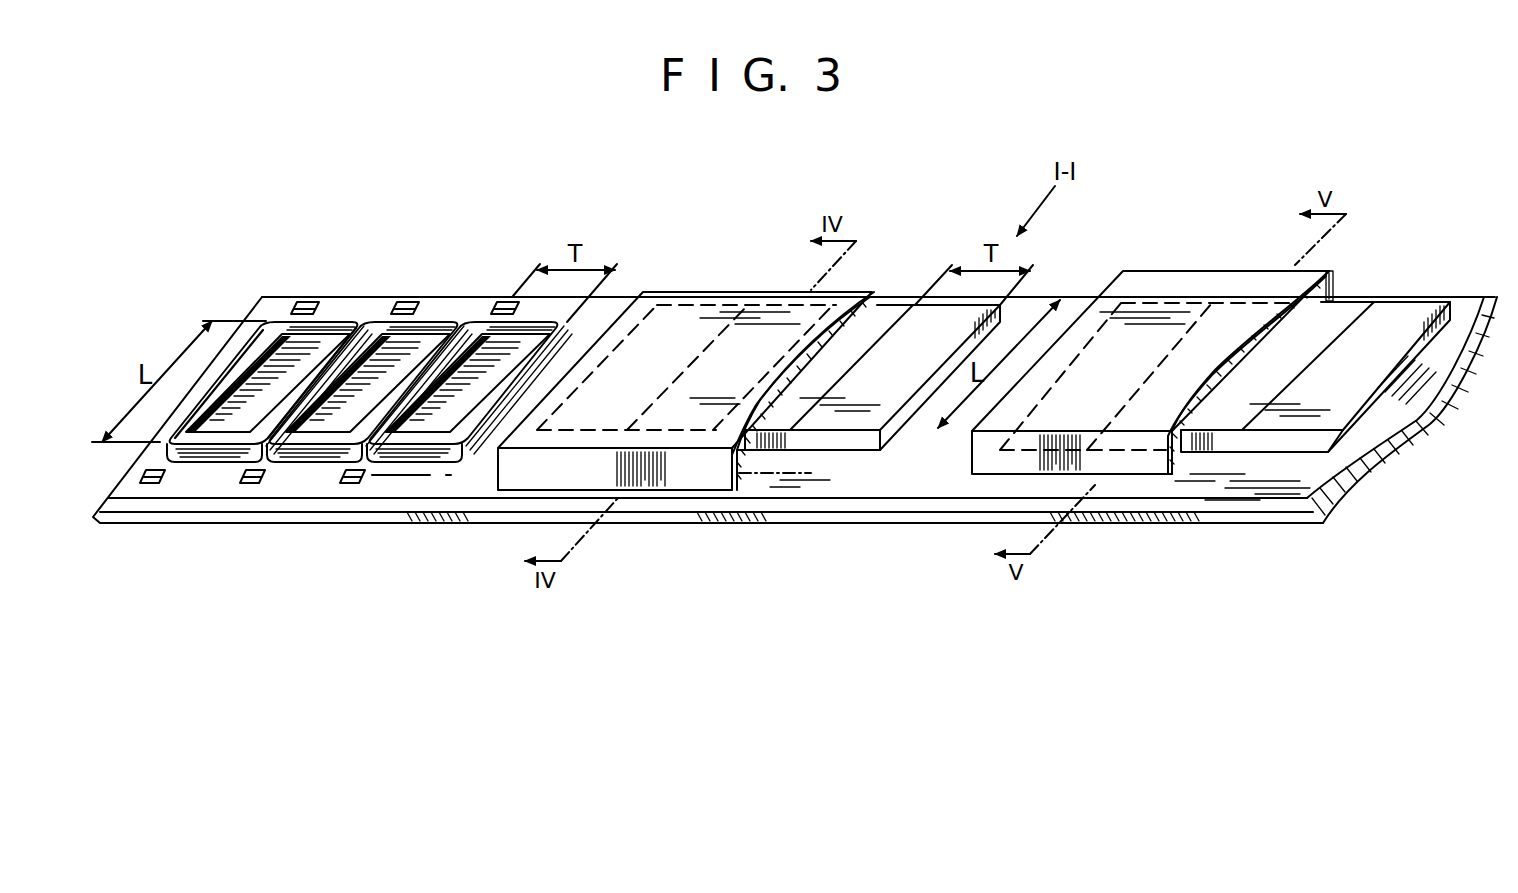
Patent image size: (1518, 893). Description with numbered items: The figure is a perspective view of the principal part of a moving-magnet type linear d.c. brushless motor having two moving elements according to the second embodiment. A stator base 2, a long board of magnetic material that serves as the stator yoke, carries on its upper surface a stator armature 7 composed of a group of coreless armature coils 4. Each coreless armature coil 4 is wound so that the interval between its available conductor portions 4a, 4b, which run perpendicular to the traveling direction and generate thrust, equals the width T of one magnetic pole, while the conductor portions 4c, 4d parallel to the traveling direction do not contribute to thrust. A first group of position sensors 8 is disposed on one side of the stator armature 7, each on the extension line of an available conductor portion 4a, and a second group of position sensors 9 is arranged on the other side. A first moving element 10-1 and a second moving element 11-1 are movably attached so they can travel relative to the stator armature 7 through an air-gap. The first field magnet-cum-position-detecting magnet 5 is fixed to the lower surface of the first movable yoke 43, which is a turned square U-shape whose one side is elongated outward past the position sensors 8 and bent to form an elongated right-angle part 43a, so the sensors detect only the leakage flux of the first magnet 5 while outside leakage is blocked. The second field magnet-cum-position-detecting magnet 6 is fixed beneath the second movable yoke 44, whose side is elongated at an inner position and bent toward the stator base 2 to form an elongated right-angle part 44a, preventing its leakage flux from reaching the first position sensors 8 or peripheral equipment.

The stator base 2 is at (826, 482).
The coreless armature coil 4 is at (431, 295).
The available conductor portion 4a is at (228, 378).
The available conductor portion 4b is at (301, 434).
The conductor portion 4c is at (336, 322).
The conductor portion 4d is at (205, 450).
The first field magnet-cum-position-detecting magnet 5 is at (893, 318).
The second field magnet-cum-position-detecting magnet 6 is at (1341, 318).
The stator armature 7 is at (319, 281).
The first group of position sensors 8 is at (346, 484).
The second group of position sensors 9 is at (298, 302).
The first moving element 10-1 is at (719, 293).
The second moving element 11-1 is at (1223, 275).
The first movable yoke 43 is at (684, 292).
The elongated right-angle part 43a is at (699, 462).
The second movable yoke 44 is at (1161, 272).
The elongated right-angle part 44a is at (986, 462).